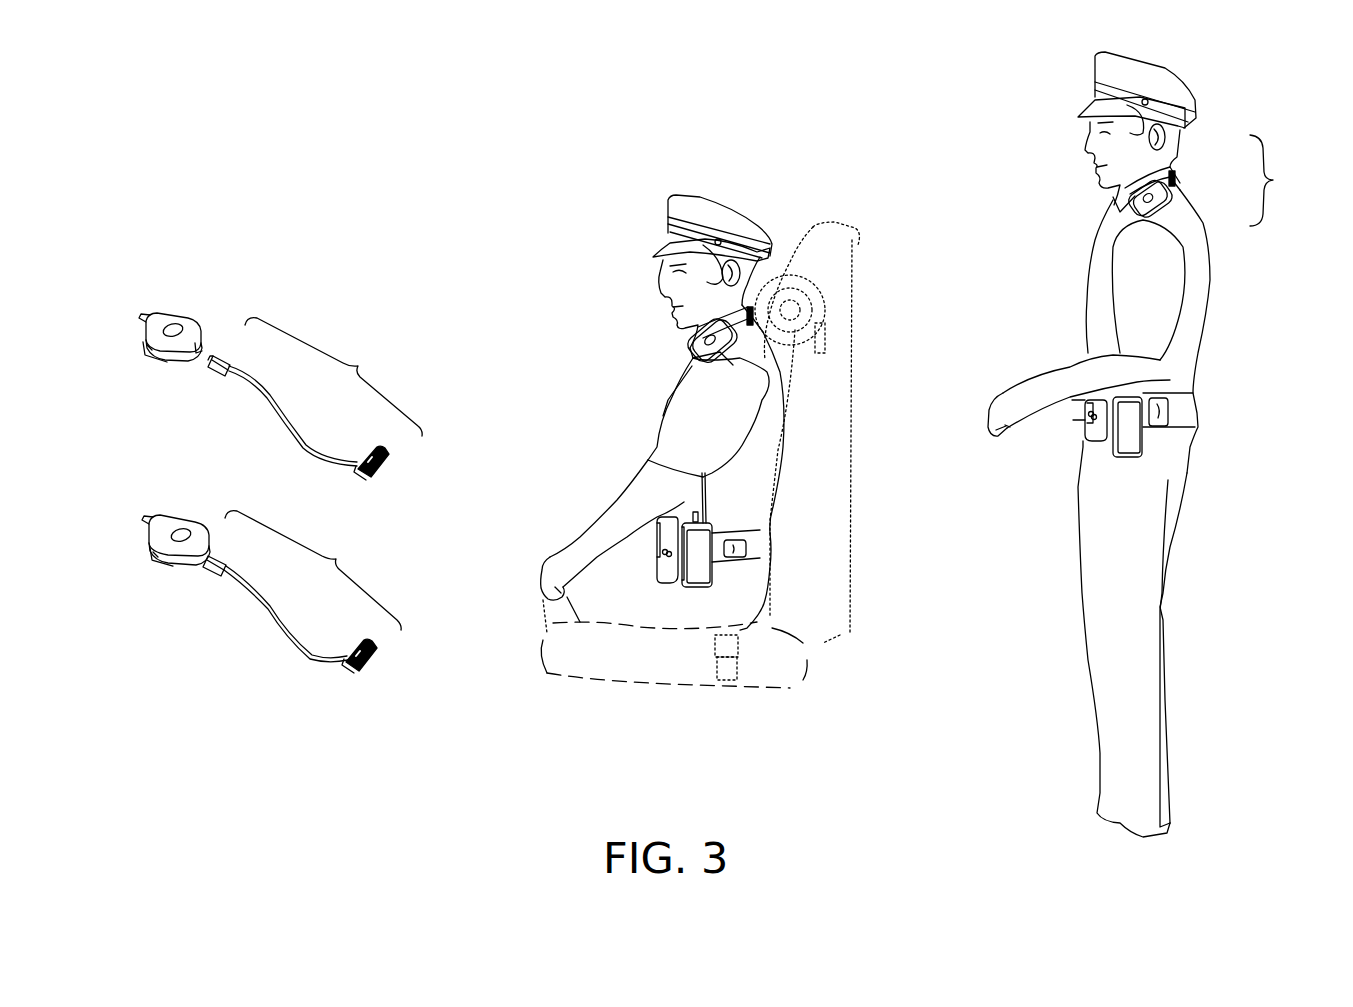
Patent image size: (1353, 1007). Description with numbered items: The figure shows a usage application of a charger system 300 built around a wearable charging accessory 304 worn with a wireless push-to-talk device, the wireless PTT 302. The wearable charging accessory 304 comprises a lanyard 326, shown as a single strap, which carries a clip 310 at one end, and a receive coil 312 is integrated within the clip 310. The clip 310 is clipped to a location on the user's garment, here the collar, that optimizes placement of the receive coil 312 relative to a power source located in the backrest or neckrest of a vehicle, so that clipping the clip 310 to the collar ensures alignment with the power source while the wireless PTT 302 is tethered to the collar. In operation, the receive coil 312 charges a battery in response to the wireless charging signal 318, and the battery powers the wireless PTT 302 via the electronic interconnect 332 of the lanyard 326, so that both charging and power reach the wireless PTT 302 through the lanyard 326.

The charger system 300 is at (915, 806).
The wireless push-to-talk (PTT) 302 is at (165, 312).
The wearable charging accessory 304 is at (780, 382).
The clip 310 is at (365, 445).
The receive coil 312 is at (376, 478).
The wireless charging signal 318 is at (791, 308).
The lanyard 326 is at (282, 426).
The electronic interconnect 332 is at (214, 376).